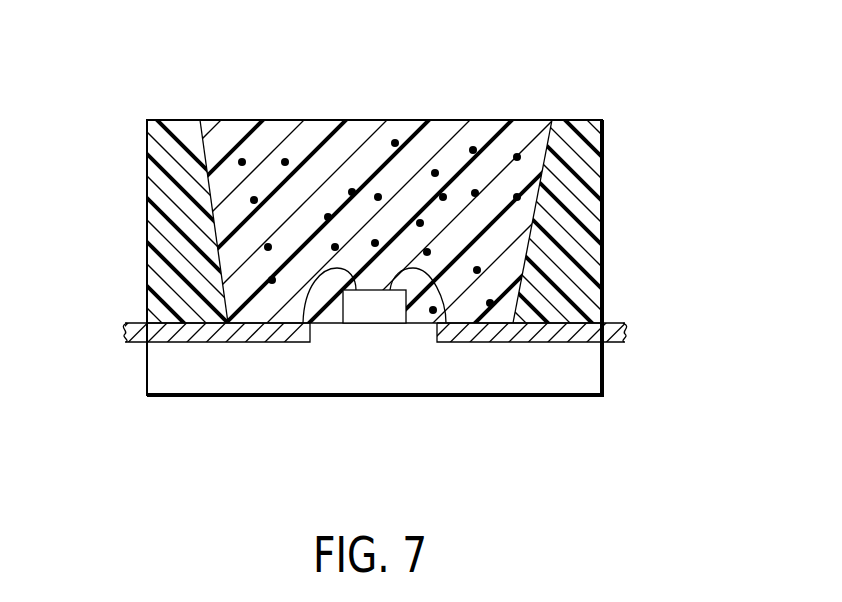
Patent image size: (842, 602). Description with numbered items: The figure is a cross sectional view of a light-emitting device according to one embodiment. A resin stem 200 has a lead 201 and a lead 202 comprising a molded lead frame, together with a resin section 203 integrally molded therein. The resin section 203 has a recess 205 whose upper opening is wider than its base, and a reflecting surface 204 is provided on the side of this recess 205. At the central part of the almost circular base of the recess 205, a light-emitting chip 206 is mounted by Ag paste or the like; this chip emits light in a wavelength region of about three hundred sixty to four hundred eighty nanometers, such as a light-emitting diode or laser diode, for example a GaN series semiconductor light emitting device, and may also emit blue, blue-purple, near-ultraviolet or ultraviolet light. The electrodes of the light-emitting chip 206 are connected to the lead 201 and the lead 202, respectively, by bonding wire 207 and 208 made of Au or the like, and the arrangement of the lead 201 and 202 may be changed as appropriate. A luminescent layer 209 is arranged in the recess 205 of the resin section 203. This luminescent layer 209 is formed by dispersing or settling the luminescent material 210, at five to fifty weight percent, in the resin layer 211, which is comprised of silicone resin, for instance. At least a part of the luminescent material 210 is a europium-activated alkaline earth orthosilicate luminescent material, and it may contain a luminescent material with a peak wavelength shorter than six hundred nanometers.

The resin stem 200 is at (367, 426).
The lead 201 is at (126, 334).
The lead 202 is at (625, 335).
The resin section 203 is at (593, 168).
The reflecting surface 204 is at (369, 228).
The recess 205 is at (232, 120).
The light-emitting chip 206 is at (377, 315).
The bonding wire 207 is at (317, 272).
The bonding wire 208 is at (446, 283).
The luminescent layer 209 is at (369, 228).
The luminescent material 210 is at (473, 147).
The resin layer 211 is at (370, 120).